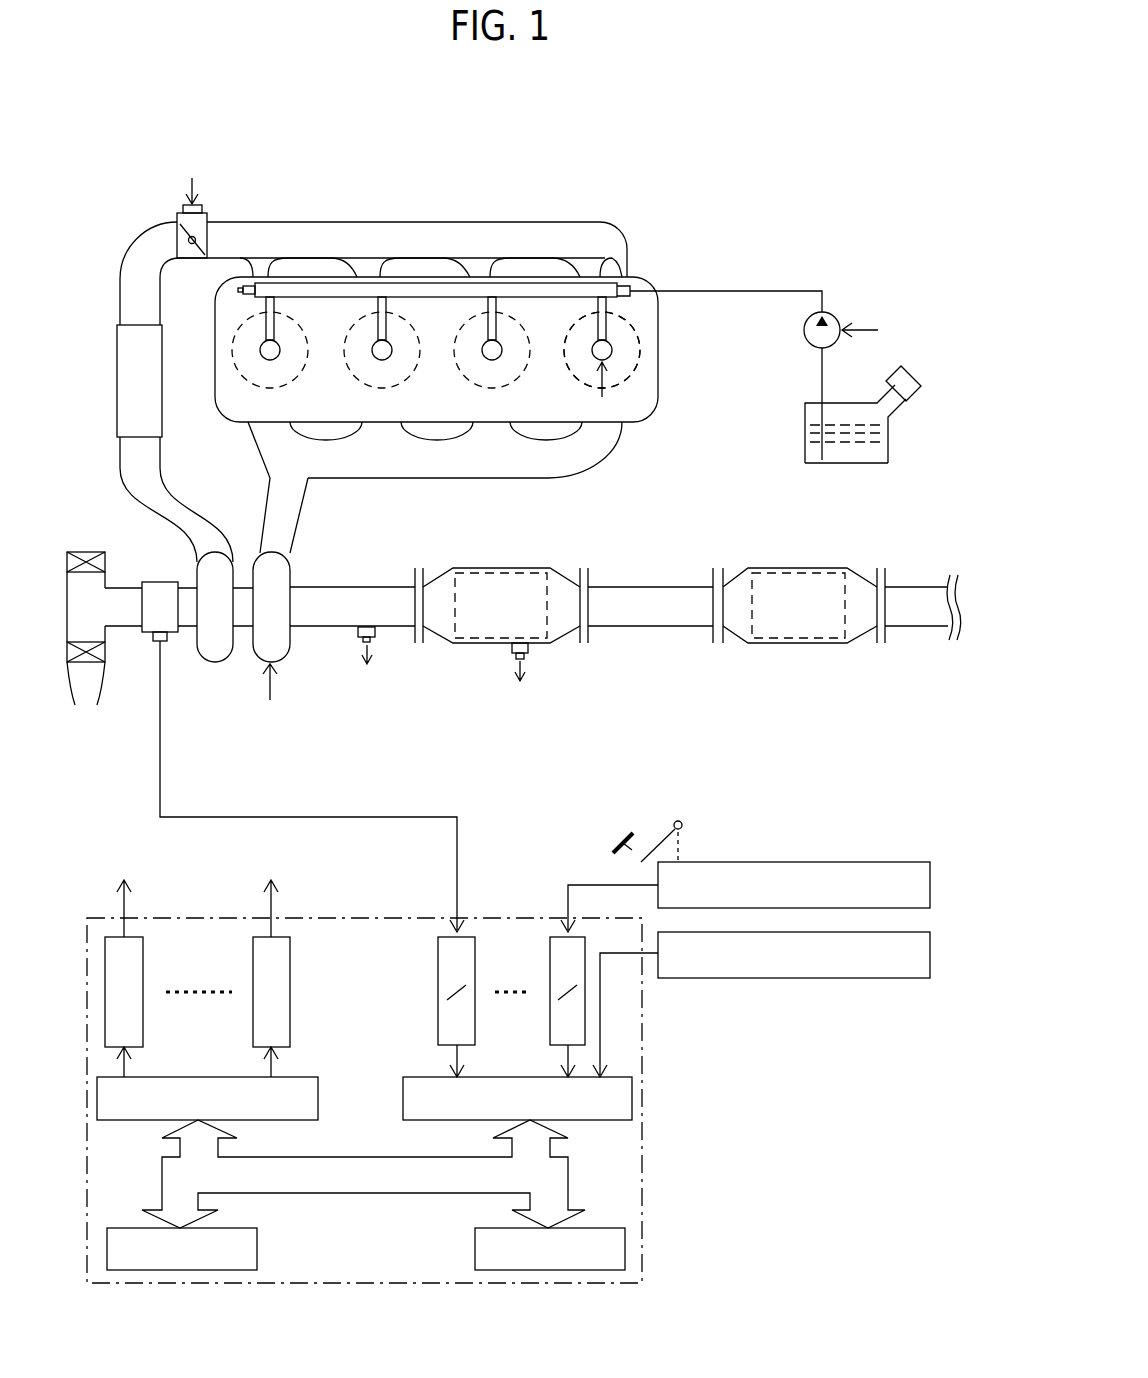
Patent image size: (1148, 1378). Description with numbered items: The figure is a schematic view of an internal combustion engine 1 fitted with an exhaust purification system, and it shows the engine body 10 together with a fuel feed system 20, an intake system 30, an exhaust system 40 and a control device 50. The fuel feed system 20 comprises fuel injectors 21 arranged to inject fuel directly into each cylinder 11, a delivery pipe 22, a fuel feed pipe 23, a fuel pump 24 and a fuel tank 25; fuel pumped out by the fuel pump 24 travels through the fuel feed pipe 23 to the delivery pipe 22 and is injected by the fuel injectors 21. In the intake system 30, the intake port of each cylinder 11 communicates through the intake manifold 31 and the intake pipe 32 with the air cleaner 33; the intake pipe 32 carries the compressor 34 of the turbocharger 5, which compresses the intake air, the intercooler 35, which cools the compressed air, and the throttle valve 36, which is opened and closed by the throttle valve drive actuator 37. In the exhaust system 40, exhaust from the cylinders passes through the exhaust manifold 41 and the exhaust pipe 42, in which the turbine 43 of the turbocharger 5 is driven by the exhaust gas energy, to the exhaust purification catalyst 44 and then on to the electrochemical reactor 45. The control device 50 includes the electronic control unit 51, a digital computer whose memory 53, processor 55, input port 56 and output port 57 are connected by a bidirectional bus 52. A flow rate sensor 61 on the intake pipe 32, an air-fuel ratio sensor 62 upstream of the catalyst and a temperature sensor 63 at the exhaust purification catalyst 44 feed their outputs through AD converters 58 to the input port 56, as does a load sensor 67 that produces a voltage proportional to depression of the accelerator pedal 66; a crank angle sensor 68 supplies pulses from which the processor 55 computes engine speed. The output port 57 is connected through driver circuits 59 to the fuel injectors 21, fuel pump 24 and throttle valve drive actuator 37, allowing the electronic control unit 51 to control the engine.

The internal combustion engine 1 is at (852, 110).
The turbocharger 5 is at (258, 660).
The engine body 10 is at (652, 277).
The cylinder 11 is at (633, 372).
The fuel feed system 20 is at (797, 274).
The fuel injector 21 is at (591, 352).
The delivery pipe 22 is at (606, 283).
The fuel feed pipe 23 is at (740, 291).
The fuel pump 24 is at (838, 318).
The fuel tank 25 is at (843, 463).
The intake system 30 is at (72, 279).
The intake manifold 31 is at (500, 222).
The intake pipe 32 is at (117, 587).
The air cleaner 33 is at (105, 672).
The compressor 34 is at (222, 655).
The intercooler 35 is at (117, 375).
The throttle valve 36 is at (208, 220).
The throttle valve drive actuator 37 is at (175, 222).
The exhaust system 40 is at (555, 506).
The exhaust manifold 41 is at (412, 480).
The exhaust pipe 42 is at (343, 587).
The turbine 43 is at (285, 640).
The exhaust purification catalyst 44 is at (480, 643).
The electrochemical reactor 45 is at (797, 643).
The control device 50 is at (468, 1089).
The electronic control unit 51 is at (318, 918).
The bidirectional bus 52 is at (568, 1180).
The memory 53 is at (192, 1270).
The processor 55 is at (555, 1270).
The input port 56 is at (415, 1077).
The output port 57 is at (306, 1077).
The AD converter 58 is at (550, 957).
The driver circuit 59 is at (253, 950).
The flow rate sensor 61 is at (160, 582).
The air-fuel ratio sensor 62 is at (378, 645).
The temperature sensor 63 is at (528, 652).
The accelerator pedal 66 is at (645, 848).
The load sensor 67 is at (858, 862).
The crank angle sensor 68 is at (878, 978).